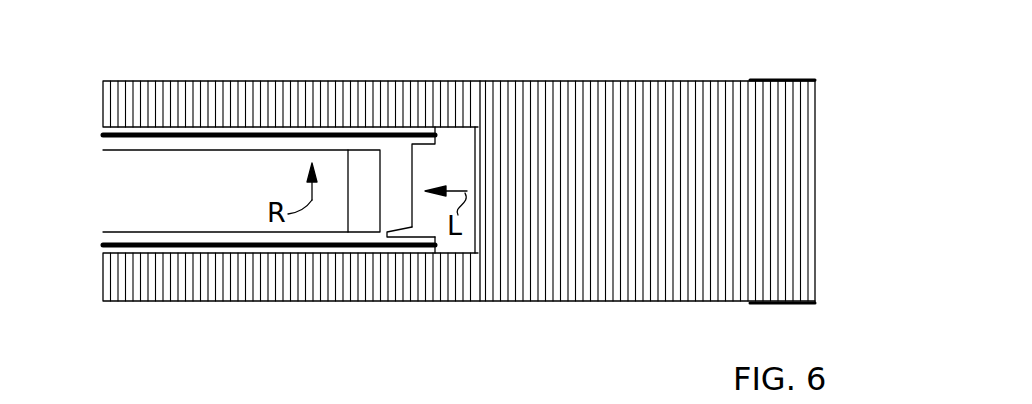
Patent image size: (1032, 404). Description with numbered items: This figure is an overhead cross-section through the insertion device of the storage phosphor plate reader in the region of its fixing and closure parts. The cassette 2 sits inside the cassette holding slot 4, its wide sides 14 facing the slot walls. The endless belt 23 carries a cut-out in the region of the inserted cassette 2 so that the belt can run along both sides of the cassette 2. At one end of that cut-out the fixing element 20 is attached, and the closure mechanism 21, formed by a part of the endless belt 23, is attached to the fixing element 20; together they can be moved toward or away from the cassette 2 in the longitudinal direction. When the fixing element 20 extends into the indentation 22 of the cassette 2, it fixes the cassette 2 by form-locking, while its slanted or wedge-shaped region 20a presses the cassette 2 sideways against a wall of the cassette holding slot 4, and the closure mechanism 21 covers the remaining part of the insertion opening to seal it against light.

The cassette 2 is at (137, 200).
The cassette holding slot 4 is at (103, 136).
The wide sides 14 is at (245, 150).
The fixing element 20 is at (462, 140).
The slanted or wedge-shaped region 20a is at (400, 235).
The closure mechanism 21 is at (650, 100).
The indentation 22 is at (369, 165).
The endless belt 23 is at (258, 302).